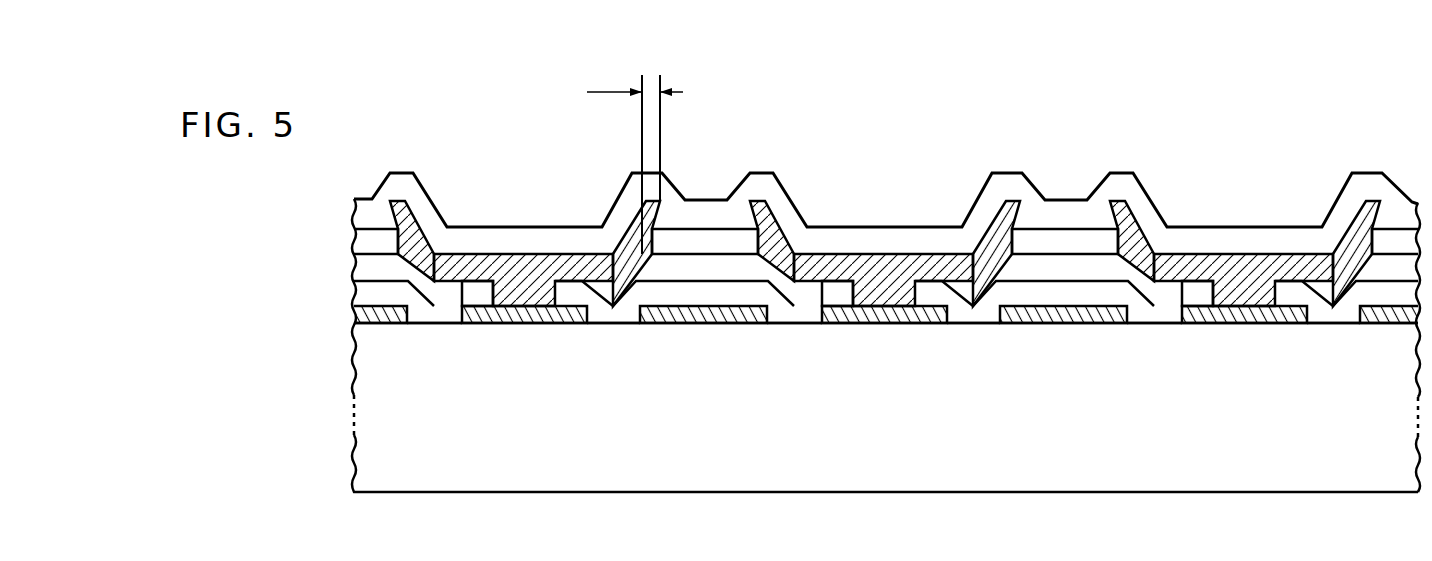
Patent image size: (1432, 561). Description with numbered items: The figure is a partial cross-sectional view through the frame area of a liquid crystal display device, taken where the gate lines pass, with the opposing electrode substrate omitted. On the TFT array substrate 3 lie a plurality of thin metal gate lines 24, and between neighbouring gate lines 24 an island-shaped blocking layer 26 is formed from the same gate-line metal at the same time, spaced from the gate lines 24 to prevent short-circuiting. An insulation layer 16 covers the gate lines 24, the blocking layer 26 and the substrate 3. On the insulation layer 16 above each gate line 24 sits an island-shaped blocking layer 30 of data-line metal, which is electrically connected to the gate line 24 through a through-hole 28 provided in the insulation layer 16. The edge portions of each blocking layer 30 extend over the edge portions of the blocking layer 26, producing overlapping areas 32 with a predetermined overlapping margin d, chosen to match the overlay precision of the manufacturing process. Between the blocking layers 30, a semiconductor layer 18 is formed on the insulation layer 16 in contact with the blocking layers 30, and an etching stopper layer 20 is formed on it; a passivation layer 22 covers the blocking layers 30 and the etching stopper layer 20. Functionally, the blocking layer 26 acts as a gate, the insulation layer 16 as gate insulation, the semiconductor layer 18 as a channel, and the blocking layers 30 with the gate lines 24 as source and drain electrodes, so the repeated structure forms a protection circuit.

The TFT array substrate 3 is at (892, 458).
The insulation layer 16 is at (611, 313).
The semiconductor layer 18 is at (705, 266).
The etching stopper layer 20 is at (717, 237).
The passivation layer 22 is at (463, 227).
The gate line 24 is at (517, 307).
The blocking layer 26 is at (697, 317).
The through-hole 28 is at (462, 282).
The blocking layer 30 is at (523, 258).
The overlapping area 32 is at (650, 88).